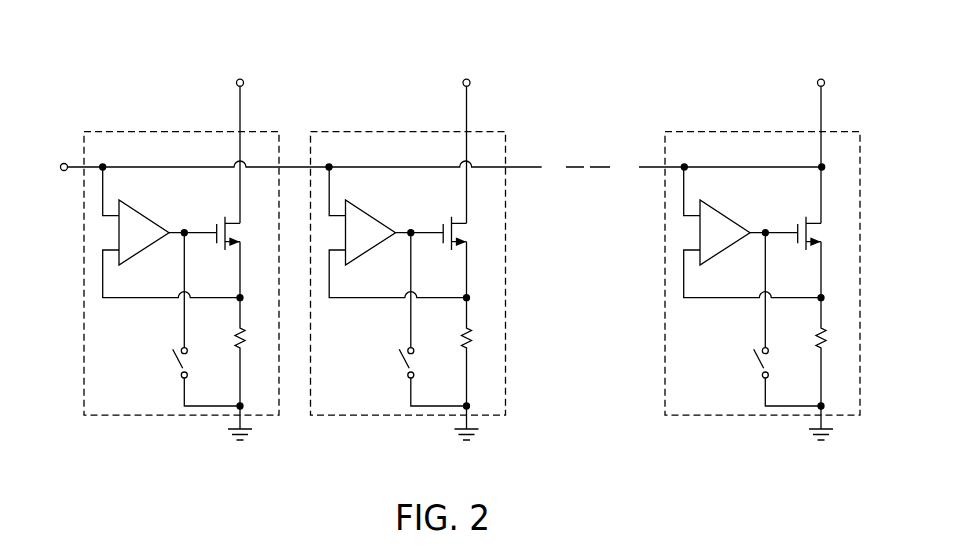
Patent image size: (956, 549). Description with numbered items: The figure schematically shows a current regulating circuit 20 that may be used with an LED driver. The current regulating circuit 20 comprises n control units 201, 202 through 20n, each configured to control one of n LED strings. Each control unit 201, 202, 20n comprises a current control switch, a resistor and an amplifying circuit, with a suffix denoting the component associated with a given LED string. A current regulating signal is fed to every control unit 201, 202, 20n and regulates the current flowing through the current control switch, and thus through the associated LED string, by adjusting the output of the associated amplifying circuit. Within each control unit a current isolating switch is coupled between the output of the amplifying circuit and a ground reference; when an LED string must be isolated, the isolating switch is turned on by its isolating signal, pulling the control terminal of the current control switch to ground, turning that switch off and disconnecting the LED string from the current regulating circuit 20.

The current regulating circuit 20 is at (108, 33).
The first control unit 201 is at (125, 132).
The second control unit 202 is at (352, 132).
The n-th control unit 20n is at (702, 132).